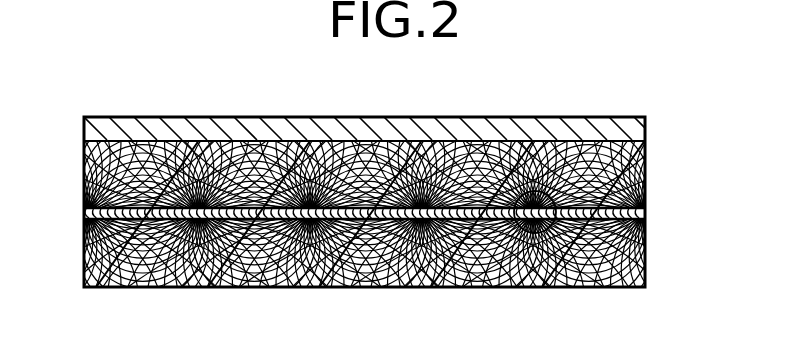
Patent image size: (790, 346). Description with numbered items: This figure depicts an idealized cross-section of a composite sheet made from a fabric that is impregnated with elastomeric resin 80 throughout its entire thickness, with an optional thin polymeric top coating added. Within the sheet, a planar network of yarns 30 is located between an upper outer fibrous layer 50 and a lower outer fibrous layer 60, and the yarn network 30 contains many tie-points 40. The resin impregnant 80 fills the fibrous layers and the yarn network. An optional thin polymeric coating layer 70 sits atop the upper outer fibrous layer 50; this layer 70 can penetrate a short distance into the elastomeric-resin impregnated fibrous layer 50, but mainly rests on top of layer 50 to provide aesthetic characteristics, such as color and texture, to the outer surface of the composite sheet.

The planar network of yarns 30 is at (658, 207).
The tie-point 40 is at (549, 194).
The upper outer fibrous layer 50 is at (658, 142).
The lower outer fibrous layer 60 is at (658, 222).
The thin polymeric coating layer 70 is at (658, 117).
The elastomeric resin 80 is at (186, 117).